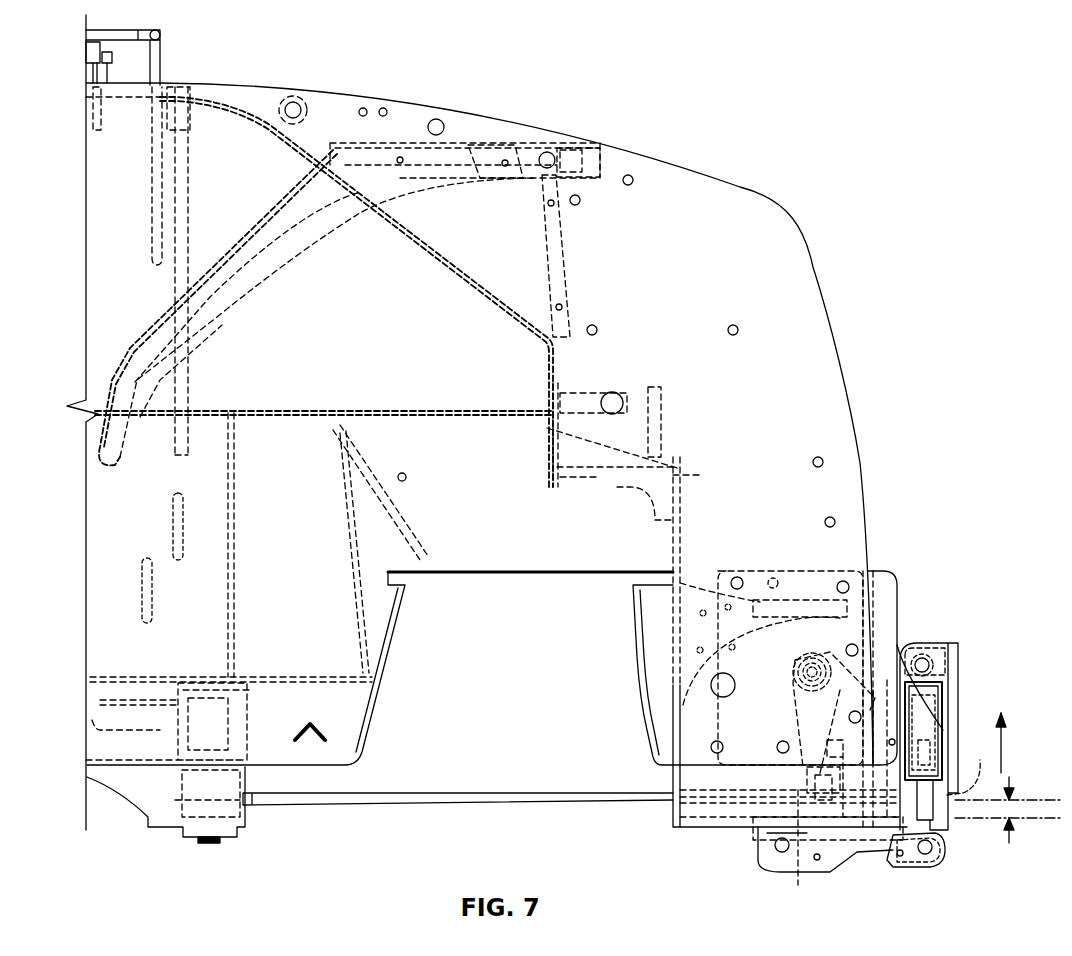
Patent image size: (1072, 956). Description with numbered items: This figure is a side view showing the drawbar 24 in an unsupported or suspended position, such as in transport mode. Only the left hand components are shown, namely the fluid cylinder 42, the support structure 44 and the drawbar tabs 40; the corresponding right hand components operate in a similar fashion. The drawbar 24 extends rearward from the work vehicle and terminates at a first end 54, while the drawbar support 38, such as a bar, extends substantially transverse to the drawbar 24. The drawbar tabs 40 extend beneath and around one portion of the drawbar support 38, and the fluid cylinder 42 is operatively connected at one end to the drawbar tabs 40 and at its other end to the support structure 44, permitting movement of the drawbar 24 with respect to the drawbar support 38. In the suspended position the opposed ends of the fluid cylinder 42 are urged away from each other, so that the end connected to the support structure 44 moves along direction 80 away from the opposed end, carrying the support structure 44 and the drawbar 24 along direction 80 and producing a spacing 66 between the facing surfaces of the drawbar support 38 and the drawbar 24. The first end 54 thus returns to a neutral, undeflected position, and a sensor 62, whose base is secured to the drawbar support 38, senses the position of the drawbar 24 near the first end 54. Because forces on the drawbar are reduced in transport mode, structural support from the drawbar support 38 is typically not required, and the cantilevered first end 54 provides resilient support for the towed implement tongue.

The drawbar 24 is at (452, 800).
The drawbar support 38 is at (828, 836).
The drawbar hangers or tabs 40 is at (940, 866).
The fluid cylinder 42 is at (943, 748).
The support structure 44 is at (958, 650).
The first end 54 is at (970, 766).
The sensor 62 is at (790, 795).
The spacing 66 is at (1013, 810).
The direction 80 is at (1001, 743).